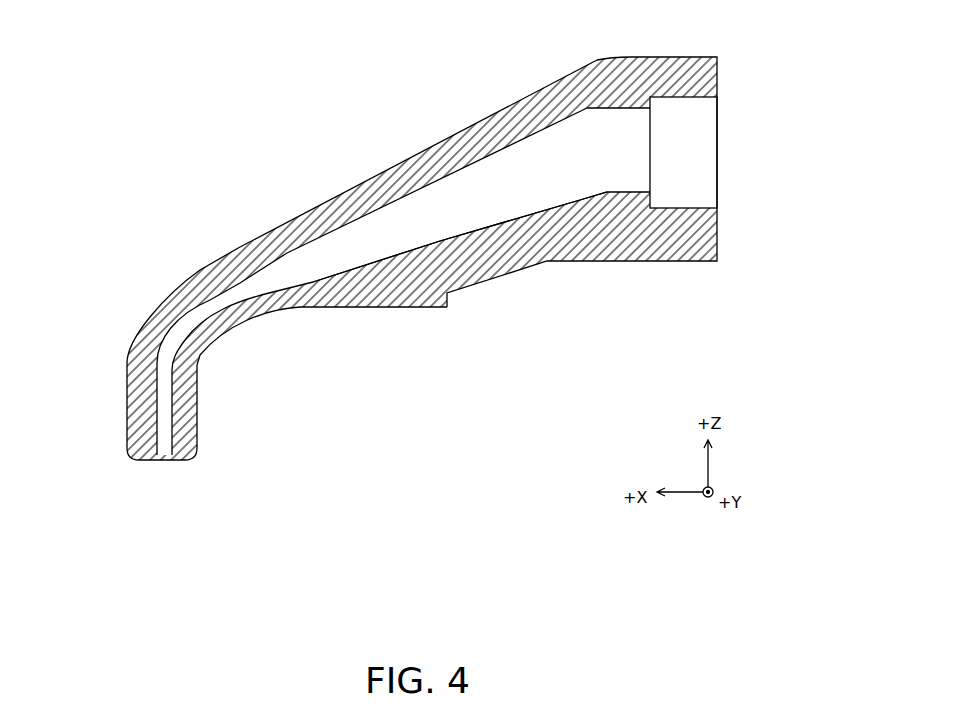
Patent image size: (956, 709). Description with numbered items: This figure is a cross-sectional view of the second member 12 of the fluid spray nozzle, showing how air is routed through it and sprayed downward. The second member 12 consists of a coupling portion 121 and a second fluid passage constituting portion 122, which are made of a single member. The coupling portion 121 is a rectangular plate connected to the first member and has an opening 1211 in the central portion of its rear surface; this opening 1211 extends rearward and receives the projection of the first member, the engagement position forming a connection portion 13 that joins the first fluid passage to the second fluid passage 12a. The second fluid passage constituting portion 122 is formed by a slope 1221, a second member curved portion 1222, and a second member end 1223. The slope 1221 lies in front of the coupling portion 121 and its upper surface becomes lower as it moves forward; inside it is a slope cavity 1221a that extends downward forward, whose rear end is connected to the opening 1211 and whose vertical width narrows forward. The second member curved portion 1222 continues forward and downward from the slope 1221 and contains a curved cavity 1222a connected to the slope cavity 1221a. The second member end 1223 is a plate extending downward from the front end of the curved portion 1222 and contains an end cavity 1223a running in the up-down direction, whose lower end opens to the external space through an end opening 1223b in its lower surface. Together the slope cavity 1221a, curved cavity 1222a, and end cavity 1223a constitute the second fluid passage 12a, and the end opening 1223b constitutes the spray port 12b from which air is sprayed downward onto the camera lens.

The second member 12 is at (424, 283).
The second fluid passage 12a is at (558, 150).
The spray port 12b is at (163, 462).
The coupling portion 121 is at (629, 199).
The opening 1211 is at (731, 152).
The connection portion 13 is at (685, 207).
The second fluid passage constituting portion 122 is at (322, 300).
The slope 1221 is at (418, 156).
The slope cavity 1221a is at (437, 200).
The second member curved portion 1222 is at (210, 353).
The curved cavity 1222a is at (187, 337).
The second member end 1223 is at (177, 452).
The end cavity 1223a is at (158, 440).
The end opening 1223b is at (199, 500).